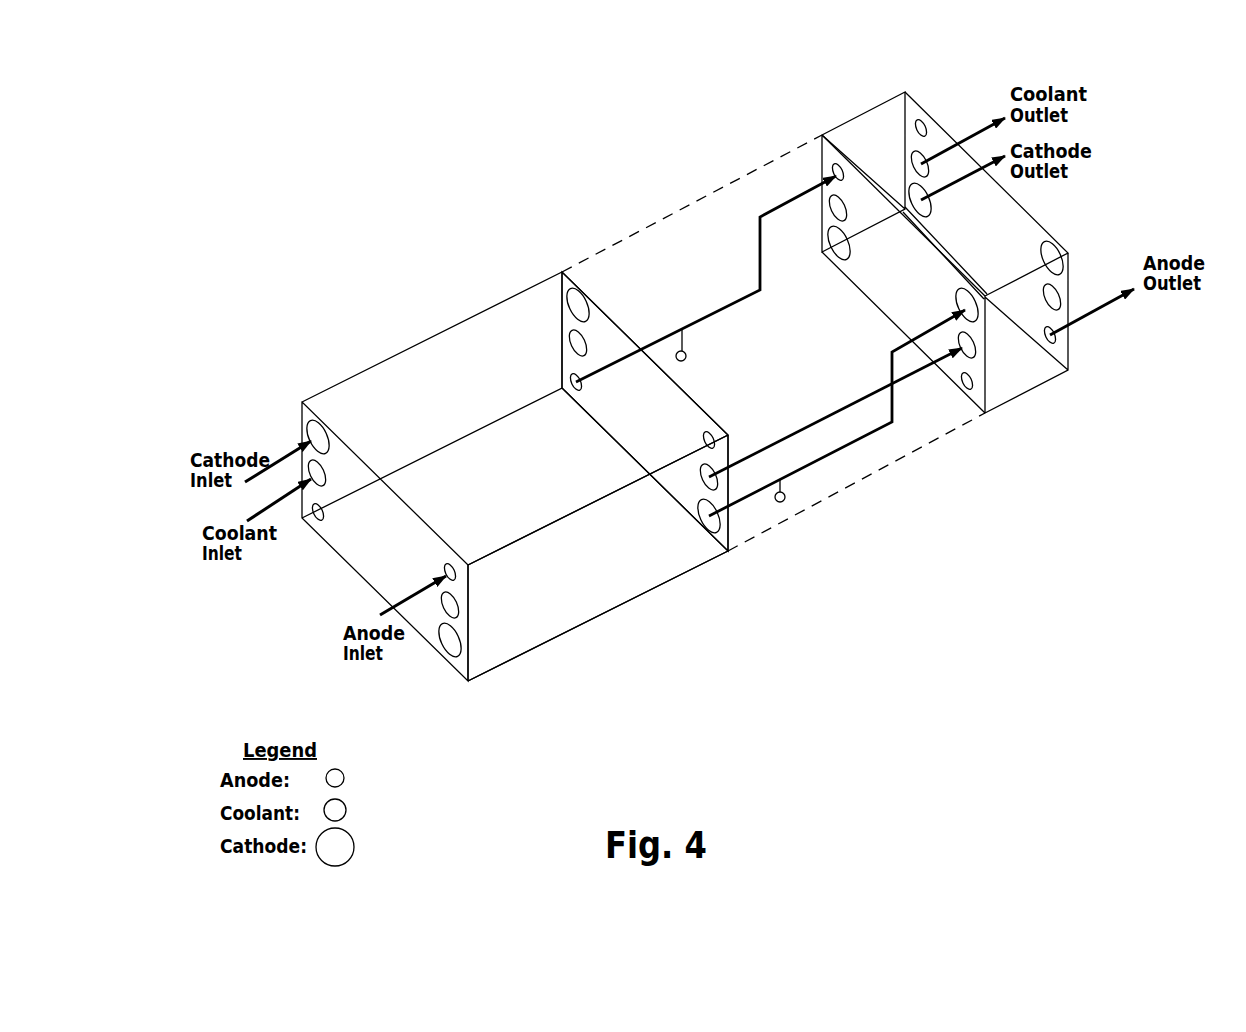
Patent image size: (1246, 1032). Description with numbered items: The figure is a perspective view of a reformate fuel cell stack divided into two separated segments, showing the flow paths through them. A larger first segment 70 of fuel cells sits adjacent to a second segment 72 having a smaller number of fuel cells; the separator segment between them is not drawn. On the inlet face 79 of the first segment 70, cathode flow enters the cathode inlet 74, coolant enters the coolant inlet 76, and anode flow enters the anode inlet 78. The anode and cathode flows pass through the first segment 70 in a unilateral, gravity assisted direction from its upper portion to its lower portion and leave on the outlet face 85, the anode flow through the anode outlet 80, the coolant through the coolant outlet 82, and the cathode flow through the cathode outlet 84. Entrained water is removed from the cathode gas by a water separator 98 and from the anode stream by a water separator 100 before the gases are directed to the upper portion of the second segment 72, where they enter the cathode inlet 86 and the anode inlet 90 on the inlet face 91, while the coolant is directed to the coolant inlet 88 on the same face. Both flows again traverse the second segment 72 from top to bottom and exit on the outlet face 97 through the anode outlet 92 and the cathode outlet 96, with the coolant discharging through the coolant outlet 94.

The first segment 70 is at (373, 398).
The second segment 72 is at (887, 132).
The cathode inlet 74 is at (307, 424).
The coolant inlet 76 is at (312, 468).
The anode inlet 78 is at (455, 577).
The inlet face 79 is at (347, 535).
The anode outlet 80 is at (563, 367).
The coolant outlet 82 is at (703, 481).
The cathode outlet 84 is at (703, 519).
The outlet face 85 is at (682, 390).
The cathode inlet 86 is at (960, 302).
The coolant inlet 88 is at (982, 358).
The anode inlet 90 is at (830, 168).
The inlet face 91 is at (883, 283).
The anode outlet 92 is at (1057, 343).
The coolant outlet 94 is at (923, 157).
The cathode outlet 96 is at (932, 214).
The outlet face 97 is at (1027, 207).
The water separator 98 is at (784, 502).
The water separator 100 is at (686, 359).